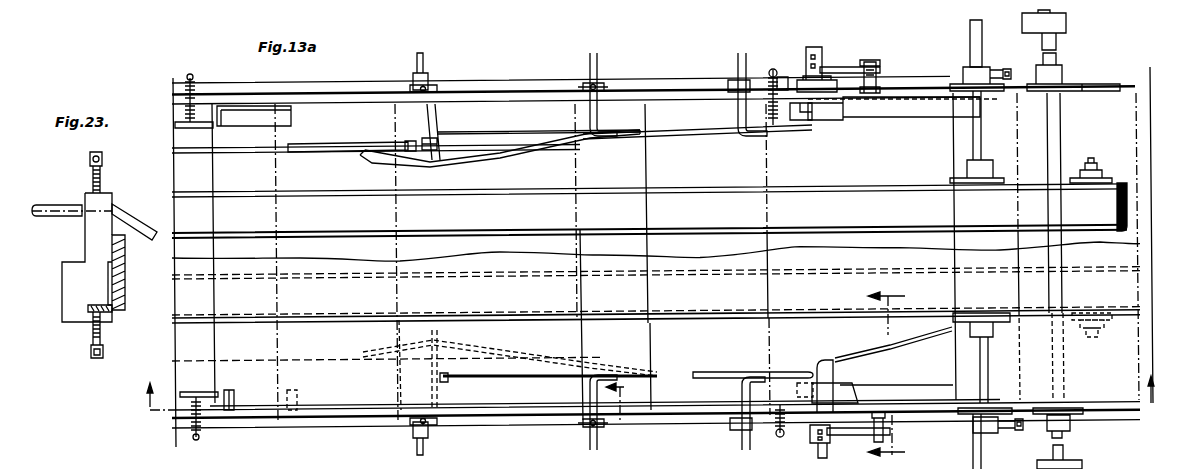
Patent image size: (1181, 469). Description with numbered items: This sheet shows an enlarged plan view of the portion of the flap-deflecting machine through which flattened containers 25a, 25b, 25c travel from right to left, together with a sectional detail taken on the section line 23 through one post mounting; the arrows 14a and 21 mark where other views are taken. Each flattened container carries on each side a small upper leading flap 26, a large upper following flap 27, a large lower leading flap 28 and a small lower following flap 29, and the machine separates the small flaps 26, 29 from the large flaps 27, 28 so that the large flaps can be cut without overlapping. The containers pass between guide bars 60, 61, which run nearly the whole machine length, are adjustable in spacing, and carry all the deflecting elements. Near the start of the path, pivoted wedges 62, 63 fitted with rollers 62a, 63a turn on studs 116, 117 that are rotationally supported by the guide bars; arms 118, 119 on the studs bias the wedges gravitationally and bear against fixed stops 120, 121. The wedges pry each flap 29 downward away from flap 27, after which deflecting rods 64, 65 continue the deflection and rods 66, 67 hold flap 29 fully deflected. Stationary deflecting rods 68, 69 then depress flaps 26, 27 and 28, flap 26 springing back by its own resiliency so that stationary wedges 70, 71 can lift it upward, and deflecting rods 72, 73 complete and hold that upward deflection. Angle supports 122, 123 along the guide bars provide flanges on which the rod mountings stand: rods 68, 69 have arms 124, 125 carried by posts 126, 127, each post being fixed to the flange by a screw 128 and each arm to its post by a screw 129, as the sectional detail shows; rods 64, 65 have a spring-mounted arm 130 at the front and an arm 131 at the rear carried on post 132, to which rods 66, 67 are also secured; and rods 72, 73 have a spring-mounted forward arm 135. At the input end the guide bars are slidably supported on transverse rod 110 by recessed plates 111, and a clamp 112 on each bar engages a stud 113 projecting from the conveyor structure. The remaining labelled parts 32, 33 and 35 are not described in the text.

In FIG. 13a, the section line 14a is at (654, 408).
In FIG. 13a, the section line 21 is at (902, 374).
In FIG. 13a, the section line 23 is at (627, 399).
In FIG. 13a, the flattened container 25a is at (648, 258).
In FIG. 13a, the flattened container 25b is at (280, 262).
In FIG. 13a, the flattened container 25c is at (250, 346).
In FIG. 13a, the small upper leading flap 26 is at (360, 415).
In FIG. 13a, the large upper following flap 27 is at (975, 368).
In FIG. 13a, the large lower leading flap 28 is at (848, 372).
In FIG. 13a, the small lower following flap 29 is at (945, 378).
In FIG. 13a, the stop 32 is at (1122, 174).
In FIG. 13a, the stop 33 is at (1130, 320).
In FIG. 13a, the frame member 35 is at (1000, 272).
In FIG. 13a, the guide bar 60 is at (678, 404).
In FIG. 23, the guide bar 60 is at (126, 286).
In FIG. 13a, the guide bar 61 is at (680, 92).
In FIG. 13a, the wedge 62 is at (852, 386).
In FIG. 13a, the roller 62a is at (806, 382).
In FIG. 13a, the wedge 63 is at (848, 124).
In FIG. 13a, the roller 63a is at (806, 120).
In FIG. 13a, the deflecting rod 64 is at (590, 370).
In FIG. 13a, the deflecting rod 65 is at (545, 150).
In FIG. 13a, the rod 66 is at (270, 364).
In FIG. 13a, the rod 67 is at (326, 148).
In FIG. 13a, the stationary deflecting rod 68 is at (696, 372).
In FIG. 13a, the stationary deflecting rod 69 is at (752, 140).
In FIG. 13a, the stationary wedge 70 is at (265, 408).
In FIG. 13a, the stationary wedge 71 is at (258, 118).
In FIG. 13a, the deflecting rod 72 is at (196, 392).
In FIG. 13a, the deflecting rod 73 is at (194, 133).
In FIG. 13a, the transverse rod 110 is at (1066, 454).
In FIG. 13a, the plate 111 is at (1047, 424).
In FIG. 13a, the clamp 112 is at (950, 448).
In FIG. 13a, the stud 113 is at (968, 450).
In FIG. 13a, the stud 116 is at (827, 450).
In FIG. 13a, the stud 117 is at (820, 52).
In FIG. 13a, the arm 118 is at (858, 436).
In FIG. 13a, the arm 119 is at (858, 66).
In FIG. 13a, the fixed stop 120 is at (872, 417).
In FIG. 13a, the fixed stop 121 is at (882, 80).
In FIG. 13a, the angle support 122 is at (698, 428).
In FIG. 23, the angle support 122 is at (110, 314).
In FIG. 13a, the angle support 123 is at (650, 82).
In FIG. 13a, the arm 124 is at (752, 448).
In FIG. 13a, the arm 125 is at (652, 104).
In FIG. 23, the arm 125 is at (134, 224).
In FIG. 13a, the post 126 is at (742, 432).
In FIG. 13a, the post 127 is at (588, 438).
In FIG. 23, the post 127 is at (85, 244).
In FIG. 23, the screw 128 is at (90, 350).
In FIG. 13a, the screw 129 is at (590, 428).
In FIG. 23, the screw 129 is at (88, 164).
In FIG. 13a, the arm 130 is at (784, 438).
In FIG. 13a, the arm 131 is at (446, 392).
In FIG. 13a, the post 132 is at (440, 426).
In FIG. 13a, the arm 135 is at (196, 442).